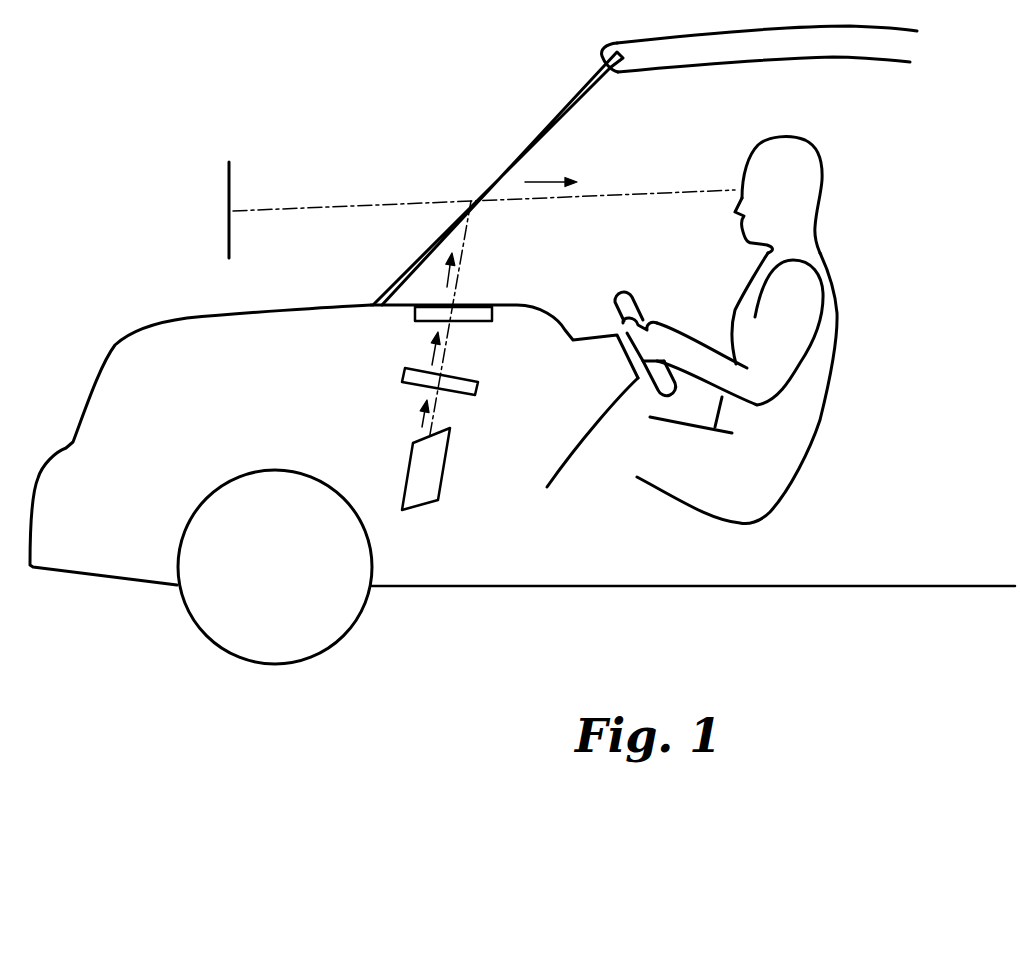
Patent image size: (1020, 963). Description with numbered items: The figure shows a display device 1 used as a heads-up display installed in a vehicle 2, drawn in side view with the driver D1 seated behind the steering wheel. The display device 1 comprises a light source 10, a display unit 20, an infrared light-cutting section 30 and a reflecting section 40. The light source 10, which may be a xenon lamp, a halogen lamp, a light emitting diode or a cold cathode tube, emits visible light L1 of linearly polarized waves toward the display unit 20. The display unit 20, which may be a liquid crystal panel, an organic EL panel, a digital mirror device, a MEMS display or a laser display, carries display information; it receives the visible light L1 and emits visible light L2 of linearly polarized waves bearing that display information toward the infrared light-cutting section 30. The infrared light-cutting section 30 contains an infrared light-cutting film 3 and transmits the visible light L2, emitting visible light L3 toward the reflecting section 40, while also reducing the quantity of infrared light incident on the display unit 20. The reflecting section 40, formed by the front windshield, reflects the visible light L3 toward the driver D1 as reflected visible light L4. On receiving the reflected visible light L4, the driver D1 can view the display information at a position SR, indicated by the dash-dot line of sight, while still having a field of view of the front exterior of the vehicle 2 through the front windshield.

The display device 1 is at (400, 104).
The vehicle 2 is at (735, 587).
The infrared light-cutting film 3 is at (476, 294).
The light source 10 is at (447, 463).
The display unit 20 is at (480, 387).
The infrared light-cutting section 30 is at (493, 313).
The reflecting section 40 is at (478, 181).
The position SR is at (212, 185).
The driver D1 is at (837, 289).
The visible light L1 is at (420, 422).
The visible light L2 is at (430, 352).
The visible light L3 is at (445, 277).
The reflected visible light L4 is at (549, 181).